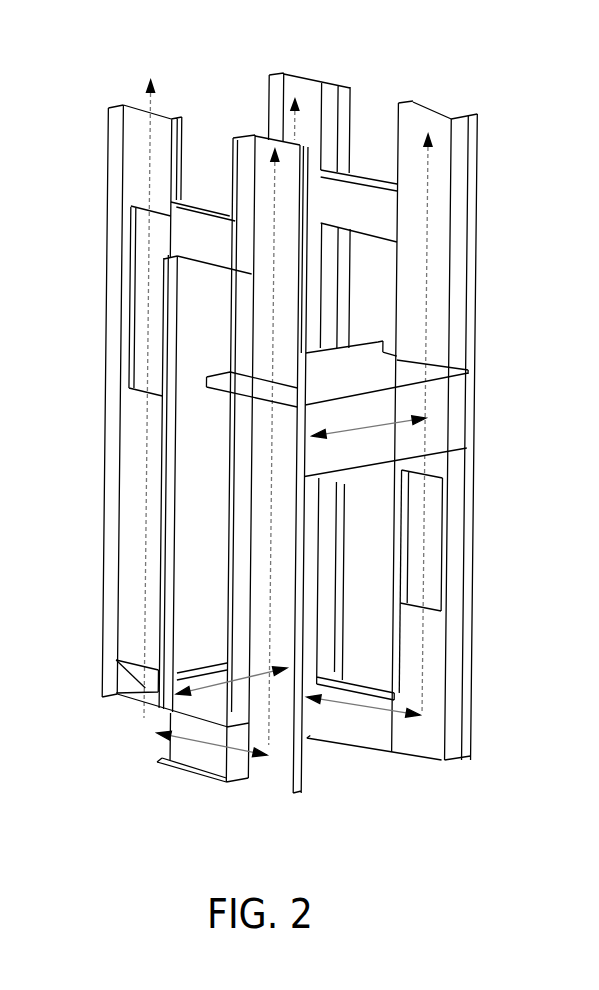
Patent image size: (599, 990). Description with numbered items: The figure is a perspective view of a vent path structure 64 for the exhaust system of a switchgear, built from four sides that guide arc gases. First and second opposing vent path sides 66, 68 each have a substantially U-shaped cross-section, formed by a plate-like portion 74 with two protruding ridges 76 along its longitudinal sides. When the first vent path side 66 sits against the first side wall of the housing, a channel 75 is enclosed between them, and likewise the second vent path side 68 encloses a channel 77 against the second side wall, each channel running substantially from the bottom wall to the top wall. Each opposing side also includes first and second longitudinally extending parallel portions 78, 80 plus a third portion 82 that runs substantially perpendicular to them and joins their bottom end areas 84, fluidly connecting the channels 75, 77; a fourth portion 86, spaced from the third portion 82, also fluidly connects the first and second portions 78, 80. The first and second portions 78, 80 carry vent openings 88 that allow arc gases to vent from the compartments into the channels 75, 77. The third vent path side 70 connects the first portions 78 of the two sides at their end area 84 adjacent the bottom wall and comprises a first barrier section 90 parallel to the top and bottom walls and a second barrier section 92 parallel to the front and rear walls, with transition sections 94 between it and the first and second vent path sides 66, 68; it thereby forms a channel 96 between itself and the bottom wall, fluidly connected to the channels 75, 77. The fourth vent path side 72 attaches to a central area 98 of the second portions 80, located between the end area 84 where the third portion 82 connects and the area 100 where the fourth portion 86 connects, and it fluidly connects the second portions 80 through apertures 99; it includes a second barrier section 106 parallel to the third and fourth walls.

The vent path structure 64 is at (87, 397).
The first vent path side 66 is at (113, 527).
The second vent path side 68 is at (469, 223).
The third vent path side 70 is at (226, 655).
The fourth vent path side 72 is at (458, 407).
The plate-like portion 74 is at (141, 200).
The channel 75 is at (134, 588).
The protruding ridges 76 is at (464, 121).
The channel 77 is at (428, 492).
The first portion 78 is at (265, 103).
The second portion 80 is at (441, 263).
The third portion 82 is at (228, 768).
The bottom end areas 84 is at (163, 728).
The fourth portion 86 is at (358, 203).
The vent openings 88 is at (128, 262).
The first barrier section 90 is at (192, 673).
The second barrier section 92 is at (300, 757).
The transition sections 94 is at (140, 677).
The channel 96 is at (161, 745).
The central area 98 is at (458, 360).
The apertures 99 is at (258, 433).
The area 100 is at (290, 258).
The second barrier section 106 is at (442, 433).